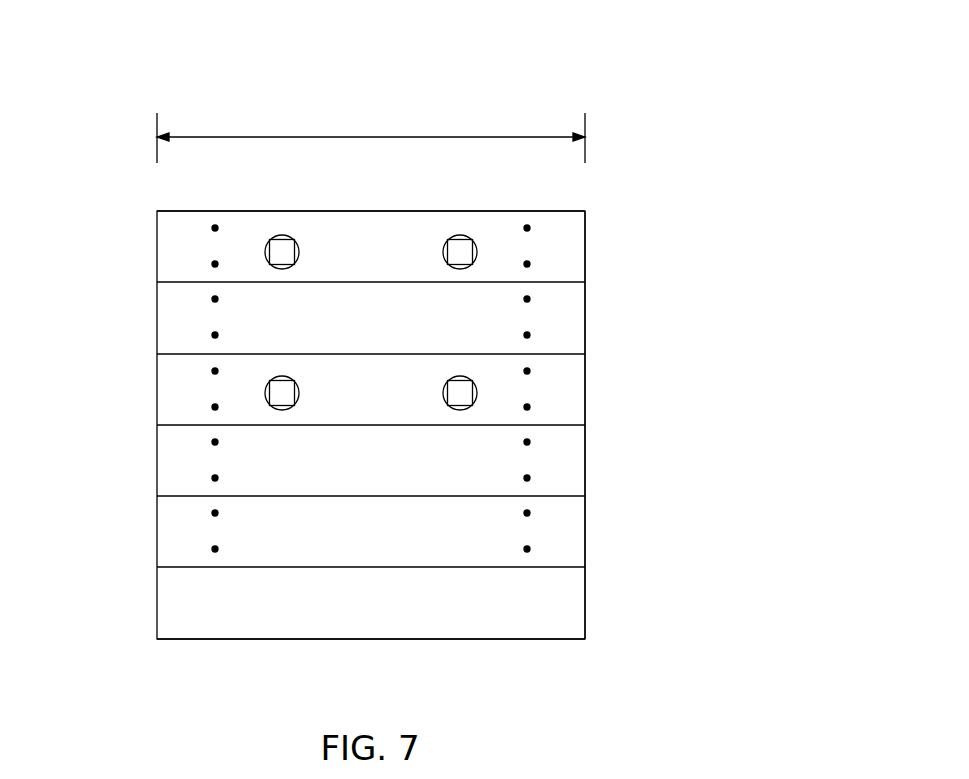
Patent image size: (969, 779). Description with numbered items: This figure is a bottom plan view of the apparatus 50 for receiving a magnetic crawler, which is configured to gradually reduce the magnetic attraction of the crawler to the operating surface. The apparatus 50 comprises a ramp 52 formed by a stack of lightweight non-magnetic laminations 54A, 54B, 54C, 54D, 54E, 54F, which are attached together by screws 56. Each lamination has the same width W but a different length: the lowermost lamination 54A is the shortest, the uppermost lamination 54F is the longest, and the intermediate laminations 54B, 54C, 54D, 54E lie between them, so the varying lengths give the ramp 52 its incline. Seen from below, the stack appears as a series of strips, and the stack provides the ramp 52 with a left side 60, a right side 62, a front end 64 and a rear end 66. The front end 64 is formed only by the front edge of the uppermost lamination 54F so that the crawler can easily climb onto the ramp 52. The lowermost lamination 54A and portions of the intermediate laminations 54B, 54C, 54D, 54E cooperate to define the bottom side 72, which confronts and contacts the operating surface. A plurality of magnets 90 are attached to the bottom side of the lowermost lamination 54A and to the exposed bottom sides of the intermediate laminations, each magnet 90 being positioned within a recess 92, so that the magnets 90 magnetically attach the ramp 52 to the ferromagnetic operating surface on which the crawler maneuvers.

The apparatus 50 is at (230, 118).
The width W is at (371, 137).
The ramp 52 is at (585, 603).
The lowermost lamination 54A is at (165, 229).
The intermediate lamination 54B is at (165, 299).
The intermediate lamination 54C is at (165, 375).
The intermediate lamination 54D is at (165, 448).
The intermediate lamination 54E is at (165, 514).
The uppermost lamination 54F is at (208, 623).
The screws 56 is at (212, 228).
The left side 60 is at (155, 416).
The right side 62 is at (585, 304).
The front end 64 is at (370, 639).
The rear end 66 is at (221, 211).
The bottom side 72 is at (566, 374).
The magnets 90 is at (281, 245).
The recess 92 is at (300, 253).